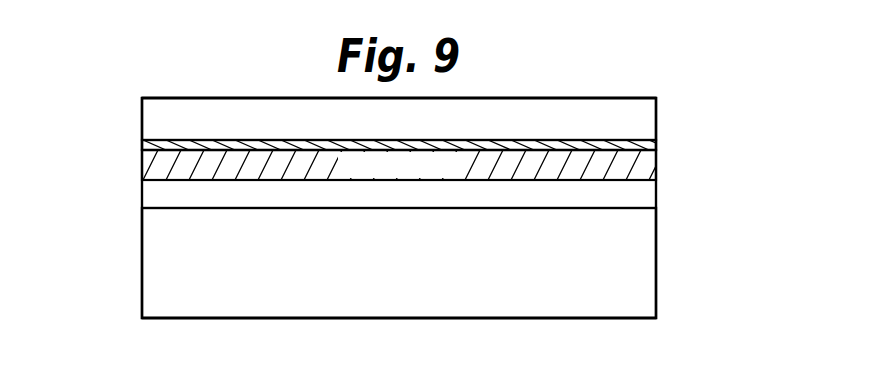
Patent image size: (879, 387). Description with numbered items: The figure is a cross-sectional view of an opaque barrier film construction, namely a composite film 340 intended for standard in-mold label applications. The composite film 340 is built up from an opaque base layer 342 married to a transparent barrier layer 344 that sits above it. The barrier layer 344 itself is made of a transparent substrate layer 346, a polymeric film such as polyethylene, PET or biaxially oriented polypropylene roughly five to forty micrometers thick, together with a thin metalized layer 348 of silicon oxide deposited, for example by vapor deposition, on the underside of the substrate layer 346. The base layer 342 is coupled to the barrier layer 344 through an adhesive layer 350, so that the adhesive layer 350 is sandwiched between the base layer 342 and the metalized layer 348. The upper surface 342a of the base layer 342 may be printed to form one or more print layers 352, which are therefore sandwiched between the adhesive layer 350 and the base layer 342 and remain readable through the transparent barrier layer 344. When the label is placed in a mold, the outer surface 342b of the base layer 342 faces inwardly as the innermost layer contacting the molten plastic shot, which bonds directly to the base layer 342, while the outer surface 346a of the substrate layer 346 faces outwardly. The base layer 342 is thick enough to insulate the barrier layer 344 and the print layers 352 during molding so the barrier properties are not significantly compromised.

The composite film 340 is at (707, 90).
The base layer 342 is at (642, 277).
The surface of base layer 342a is at (207, 211).
The outer surface of base layer 342b is at (152, 320).
The barrier layer 344 is at (132, 98).
The transparent substrate layer 346 is at (650, 125).
The outer surface of substrate layer 346a is at (163, 97).
The metalized layer 348 is at (603, 149).
The adhesive layer 350 is at (648, 163).
The print layer 352 is at (152, 193).